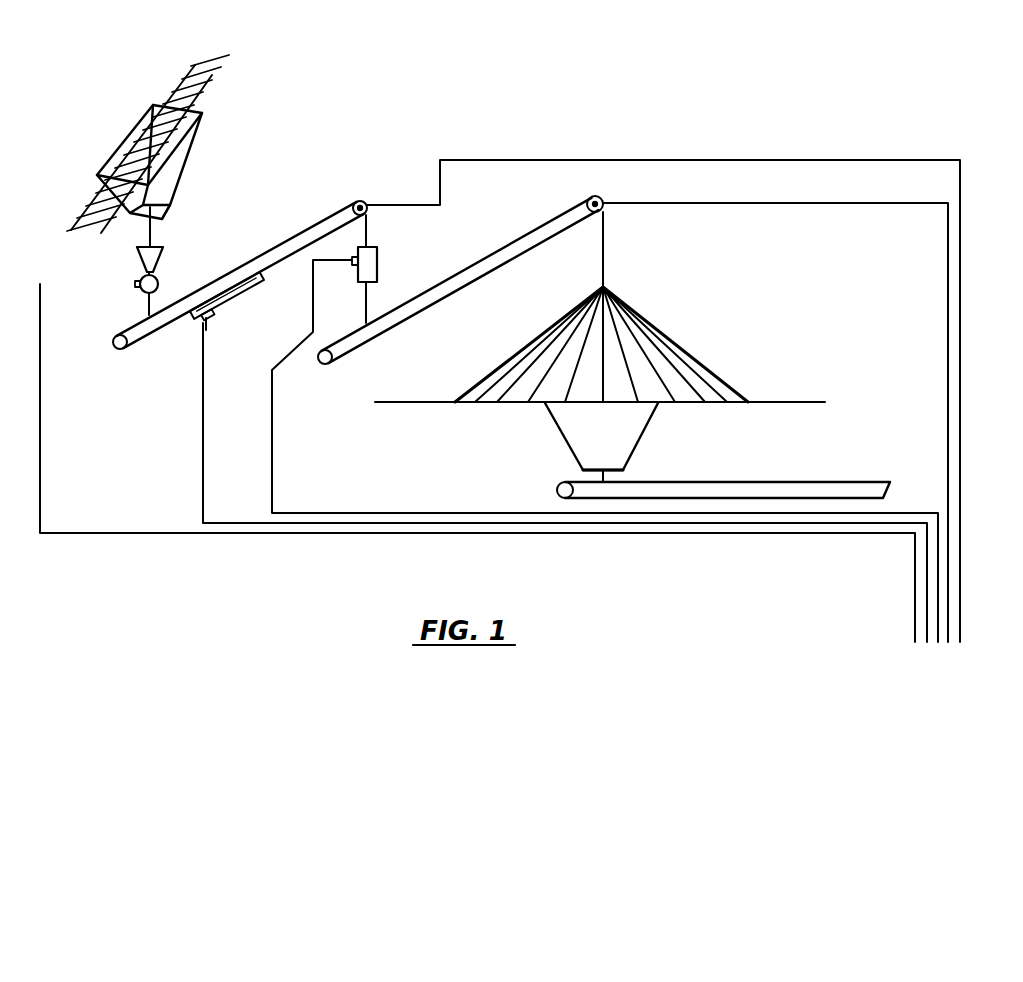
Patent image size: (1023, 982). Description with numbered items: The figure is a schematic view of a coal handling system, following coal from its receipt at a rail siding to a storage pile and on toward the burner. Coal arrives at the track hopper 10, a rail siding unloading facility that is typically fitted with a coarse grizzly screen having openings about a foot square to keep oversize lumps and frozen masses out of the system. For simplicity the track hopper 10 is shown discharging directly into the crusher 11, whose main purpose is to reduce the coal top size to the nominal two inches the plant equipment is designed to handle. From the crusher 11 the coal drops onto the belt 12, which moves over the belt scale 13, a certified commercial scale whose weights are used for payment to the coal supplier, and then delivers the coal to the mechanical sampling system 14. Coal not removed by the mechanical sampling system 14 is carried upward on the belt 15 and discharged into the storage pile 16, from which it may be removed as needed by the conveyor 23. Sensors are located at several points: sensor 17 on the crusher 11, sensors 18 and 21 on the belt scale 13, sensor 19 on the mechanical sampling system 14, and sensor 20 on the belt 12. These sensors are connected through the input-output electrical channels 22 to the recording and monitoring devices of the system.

The track hopper 10 is at (190, 167).
The crusher 11 is at (162, 258).
The belt 12 is at (257, 256).
The belt scale 13 is at (240, 296).
The mechanical sampling system 14 is at (378, 258).
The belt 15 is at (529, 231).
The storage pile 16 is at (668, 332).
The sensor 17 is at (134, 286).
The sensor 18 is at (198, 326).
The sensor 19 is at (353, 264).
The sensor 20 is at (366, 202).
The sensor 21 is at (603, 203).
The input-output electrical channels 22 is at (965, 596).
The conveyor 23 is at (743, 481).